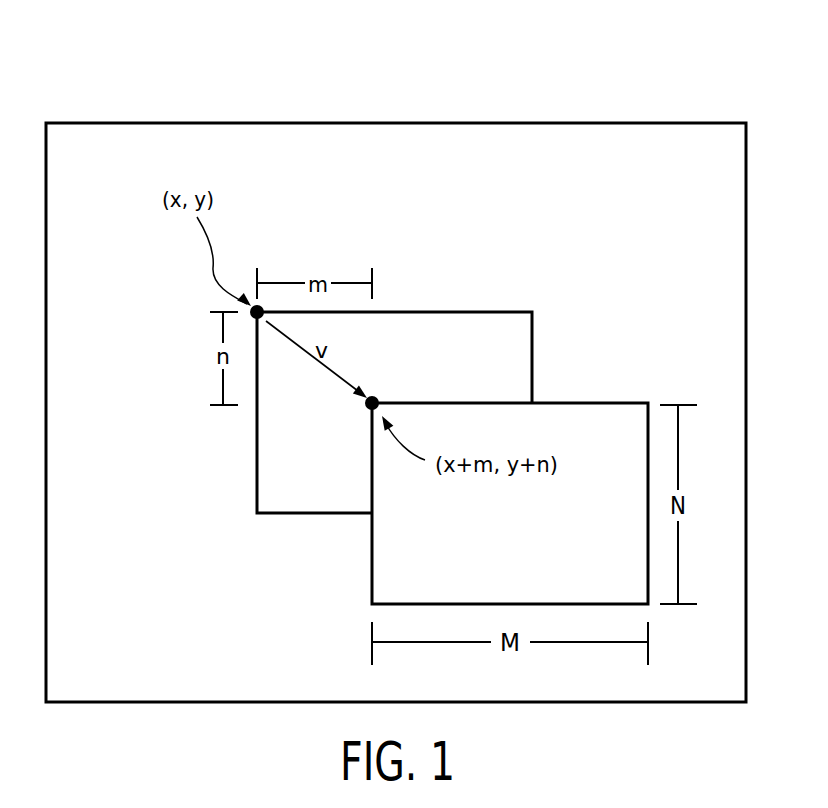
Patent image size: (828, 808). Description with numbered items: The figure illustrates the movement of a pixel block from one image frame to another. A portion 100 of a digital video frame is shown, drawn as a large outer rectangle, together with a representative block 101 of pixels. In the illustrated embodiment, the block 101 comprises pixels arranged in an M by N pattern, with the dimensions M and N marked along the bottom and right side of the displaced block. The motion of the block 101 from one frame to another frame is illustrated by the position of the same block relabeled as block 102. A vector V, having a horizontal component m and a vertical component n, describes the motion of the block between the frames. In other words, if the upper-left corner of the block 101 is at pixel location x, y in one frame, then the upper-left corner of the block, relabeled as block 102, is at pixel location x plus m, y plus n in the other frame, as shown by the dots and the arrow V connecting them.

The portion of digital video frame 100 is at (423, 123).
The block of pixels 101 is at (488, 312).
The relabeled block 102 is at (603, 403).